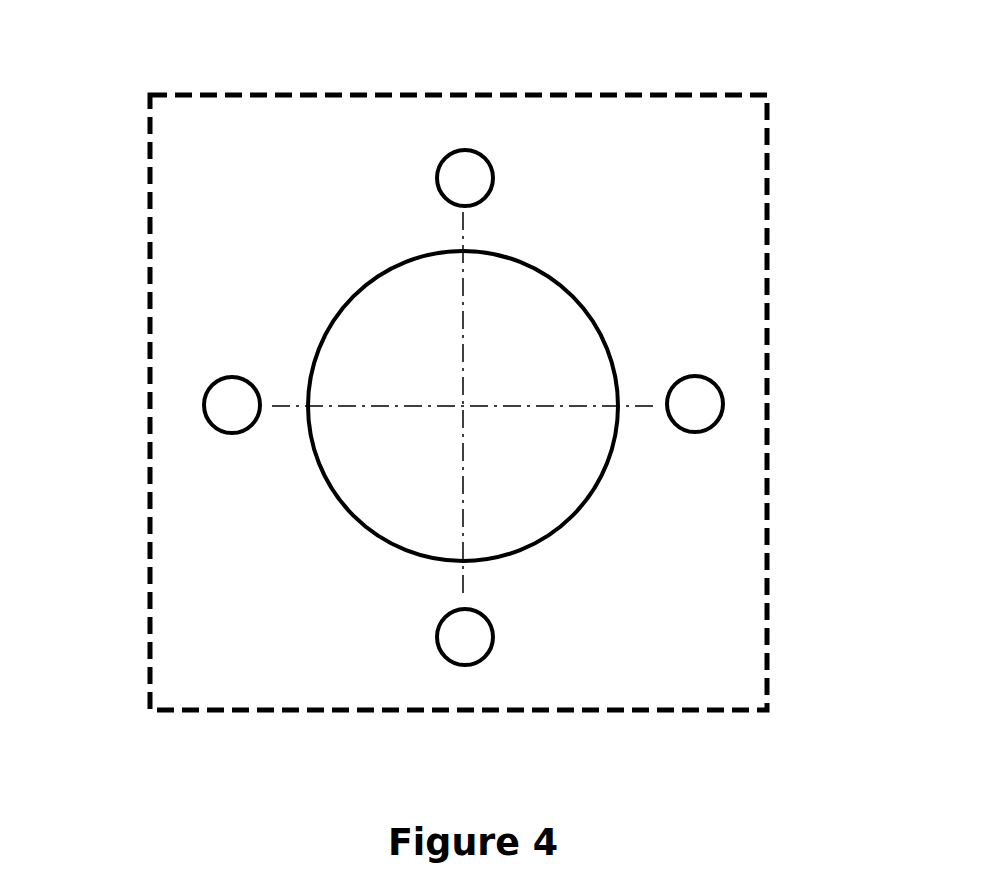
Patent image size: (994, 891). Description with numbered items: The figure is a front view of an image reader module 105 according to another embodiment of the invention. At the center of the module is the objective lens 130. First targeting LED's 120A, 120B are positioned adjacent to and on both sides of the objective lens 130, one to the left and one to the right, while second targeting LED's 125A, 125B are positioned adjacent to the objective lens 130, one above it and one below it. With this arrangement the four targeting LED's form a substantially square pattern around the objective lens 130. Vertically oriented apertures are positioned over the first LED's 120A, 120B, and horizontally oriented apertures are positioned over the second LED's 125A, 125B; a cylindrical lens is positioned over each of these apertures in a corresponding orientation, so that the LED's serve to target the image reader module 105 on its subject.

The image reader module 105 is at (770, 95).
The objective lens 130 is at (345, 293).
The second targeting LED 125A is at (439, 165).
The second targeting LED 125B is at (442, 661).
The first targeting LED 120A is at (203, 408).
The first targeting LED 120B is at (722, 410).